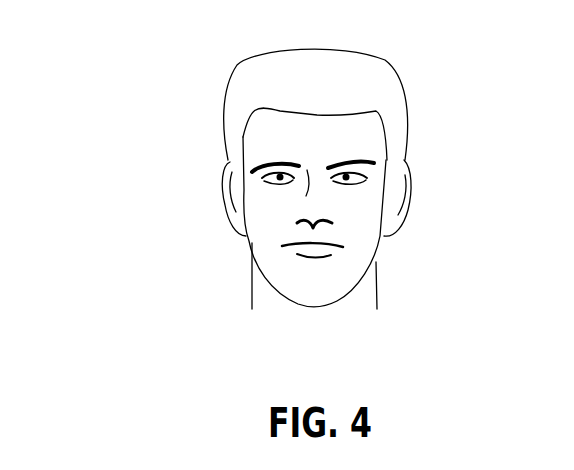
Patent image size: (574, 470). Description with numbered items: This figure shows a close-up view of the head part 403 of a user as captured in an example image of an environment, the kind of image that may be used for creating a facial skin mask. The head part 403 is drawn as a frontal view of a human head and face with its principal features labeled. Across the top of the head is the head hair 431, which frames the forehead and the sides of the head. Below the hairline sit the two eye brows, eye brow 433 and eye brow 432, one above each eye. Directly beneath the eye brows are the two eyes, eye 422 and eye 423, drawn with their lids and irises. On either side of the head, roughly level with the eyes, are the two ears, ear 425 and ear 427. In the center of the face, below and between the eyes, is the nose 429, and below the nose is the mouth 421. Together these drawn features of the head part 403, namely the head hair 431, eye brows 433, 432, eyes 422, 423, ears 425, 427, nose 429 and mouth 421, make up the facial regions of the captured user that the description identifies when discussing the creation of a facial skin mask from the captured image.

The head part 403 is at (118, 127).
The head hair 431 is at (342, 73).
The eye brow 433 is at (268, 160).
The eye brow 432 is at (348, 163).
The eye 422 is at (288, 178).
The eye 423 is at (345, 182).
The ear 425 is at (240, 228).
The ear 427 is at (390, 230).
The nose 429 is at (312, 205).
The mouth 421 is at (282, 247).